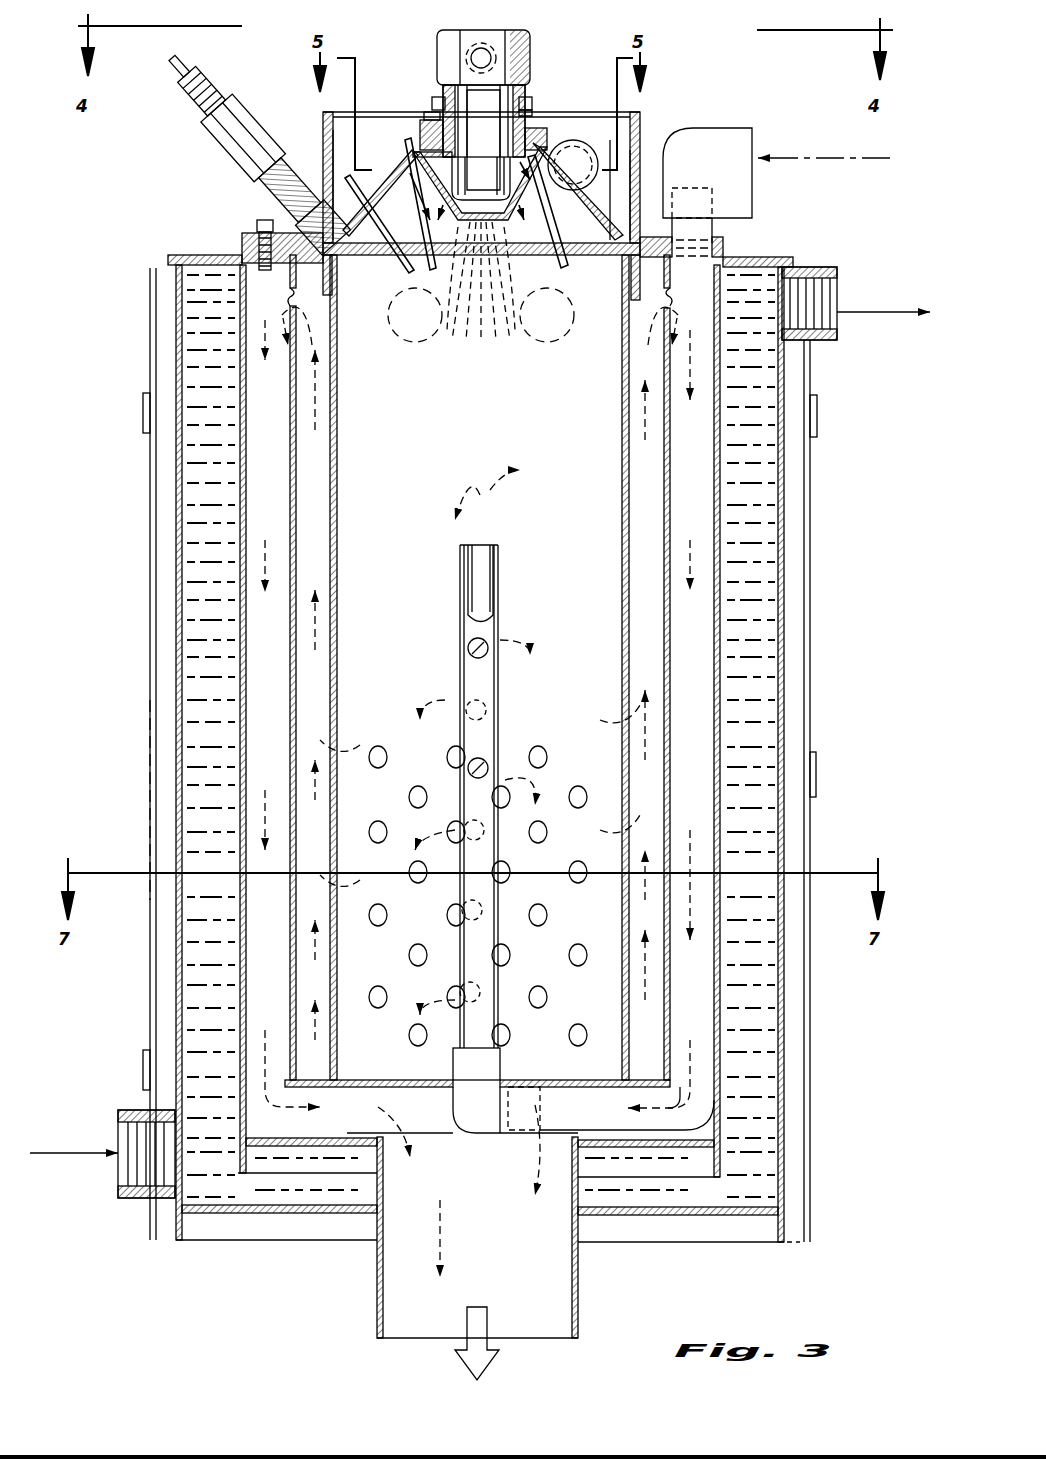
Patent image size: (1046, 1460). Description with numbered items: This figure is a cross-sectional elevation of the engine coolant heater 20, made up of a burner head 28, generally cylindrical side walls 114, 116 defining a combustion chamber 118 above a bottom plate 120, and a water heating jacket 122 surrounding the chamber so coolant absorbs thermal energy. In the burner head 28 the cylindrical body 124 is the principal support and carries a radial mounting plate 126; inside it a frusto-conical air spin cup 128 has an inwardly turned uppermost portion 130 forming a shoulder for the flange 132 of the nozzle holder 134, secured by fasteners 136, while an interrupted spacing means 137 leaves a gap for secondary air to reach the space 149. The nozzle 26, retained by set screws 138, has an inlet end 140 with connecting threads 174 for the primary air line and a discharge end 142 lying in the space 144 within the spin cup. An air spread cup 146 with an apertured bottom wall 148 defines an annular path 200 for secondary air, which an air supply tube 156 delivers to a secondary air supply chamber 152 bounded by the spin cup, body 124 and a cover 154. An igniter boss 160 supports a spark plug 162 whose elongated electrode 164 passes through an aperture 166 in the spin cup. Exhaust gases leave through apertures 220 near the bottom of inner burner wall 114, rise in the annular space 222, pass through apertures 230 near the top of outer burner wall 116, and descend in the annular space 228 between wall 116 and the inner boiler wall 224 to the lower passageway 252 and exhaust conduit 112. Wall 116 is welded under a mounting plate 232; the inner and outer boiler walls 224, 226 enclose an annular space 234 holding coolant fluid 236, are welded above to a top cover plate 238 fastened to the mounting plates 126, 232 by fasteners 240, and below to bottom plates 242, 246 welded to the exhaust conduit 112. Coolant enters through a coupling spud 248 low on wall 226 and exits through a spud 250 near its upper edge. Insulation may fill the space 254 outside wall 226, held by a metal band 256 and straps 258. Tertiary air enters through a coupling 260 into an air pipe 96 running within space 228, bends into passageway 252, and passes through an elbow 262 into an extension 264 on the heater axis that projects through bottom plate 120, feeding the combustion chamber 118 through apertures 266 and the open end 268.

The burner apparatus 20 is at (800, 252).
The nozzle 26 is at (528, 37).
The burner head 28 is at (642, 114).
The air pipe 96 is at (692, 468).
The exhaust conduit 112 is at (572, 1271).
The inner burner wall 114 is at (624, 386).
The outer burner wall 116 is at (666, 446).
The combustion chamber 118 is at (488, 392).
The bottom plate 120 is at (372, 1080).
The water heating jacket 122 is at (788, 552).
The body 124 is at (641, 147).
The mounting plate 126 is at (716, 240).
The air spin cup 128 is at (420, 138).
The uppermost portion of the spin cup 130 is at (516, 176).
The flange 132 is at (532, 125).
The nozzle holder 134 is at (534, 105).
The fasteners 136 is at (434, 100).
The spacing means 137 is at (505, 115).
The set screws 138 is at (532, 98).
The inlet end 140 is at (447, 31).
The discharge end 142 is at (493, 239).
The space 144 is at (578, 232).
The air spread cup 146 is at (436, 259).
The bottom wall 148 is at (481, 272).
The space 149 is at (481, 178).
The secondary air supply chamber 152 is at (366, 128).
The cover 154 is at (615, 147).
The air supply tube 156 is at (598, 157).
The igniter boss 160 is at (300, 211).
The spark plug 162 is at (290, 110).
The elongated electrode 164 is at (408, 266).
The aperture 166 is at (372, 190).
The connecting threads 174 is at (481, 48).
The annular path 200 is at (428, 150).
The apertures 220 is at (578, 785).
The annular space 222 is at (647, 513).
The inner boiler wall 224 is at (716, 577).
The outer boiler wall 226 is at (180, 470).
The annular space 228 is at (272, 460).
The apertures 230 is at (290, 295).
The mounting plate 232 is at (632, 267).
The annular space 234 is at (755, 496).
The coolant fluid 236 is at (770, 713).
The top cover plate 238 is at (200, 257).
The fasteners 240 is at (257, 226).
The bottom plate 242 is at (590, 1145).
The bottom plate 246 is at (728, 1214).
The coupling spud 248 is at (132, 1112).
The spud 250 is at (832, 272).
The lower passageway 252 is at (339, 1192).
The space 254 is at (168, 520).
The metal band 256 is at (150, 595).
The straps 258 is at (148, 785).
The coupling 260 is at (732, 130).
The elbow 262 is at (480, 1115).
The extension 264 is at (478, 682).
The apertures 266 is at (469, 645).
The open end 268 is at (465, 565).